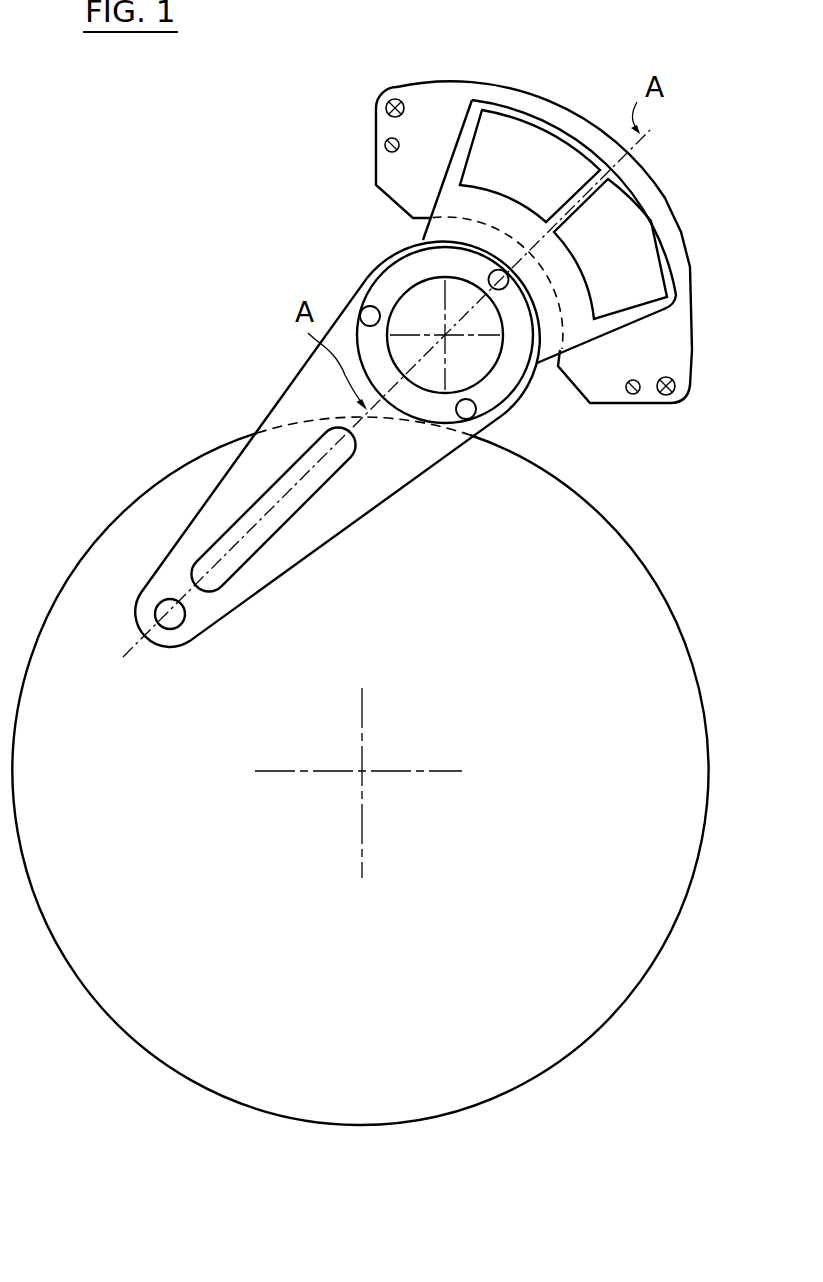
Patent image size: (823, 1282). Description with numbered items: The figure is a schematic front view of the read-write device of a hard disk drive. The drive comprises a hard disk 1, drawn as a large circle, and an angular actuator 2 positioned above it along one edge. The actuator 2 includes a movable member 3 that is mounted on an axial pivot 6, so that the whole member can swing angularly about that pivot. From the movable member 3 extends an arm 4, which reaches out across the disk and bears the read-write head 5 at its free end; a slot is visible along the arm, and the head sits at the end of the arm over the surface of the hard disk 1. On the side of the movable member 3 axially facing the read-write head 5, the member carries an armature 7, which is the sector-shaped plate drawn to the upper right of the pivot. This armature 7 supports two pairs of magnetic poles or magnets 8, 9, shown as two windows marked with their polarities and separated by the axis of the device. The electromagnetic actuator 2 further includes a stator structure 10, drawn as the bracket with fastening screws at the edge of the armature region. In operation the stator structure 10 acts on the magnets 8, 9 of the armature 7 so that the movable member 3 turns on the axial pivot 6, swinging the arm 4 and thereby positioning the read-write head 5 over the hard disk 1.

The hard disk 1 is at (619, 581).
The angular actuator 2 is at (318, 242).
The movable member 3 is at (423, 240).
The arm 4 is at (302, 410).
The read-write head 5 is at (169, 612).
The axial pivot 6 is at (447, 340).
The armature 7 is at (578, 328).
The magnetic poles or magnets 8 is at (565, 159).
The magnetic poles or magnets 9 is at (630, 230).
The stator structure 10 is at (408, 129).